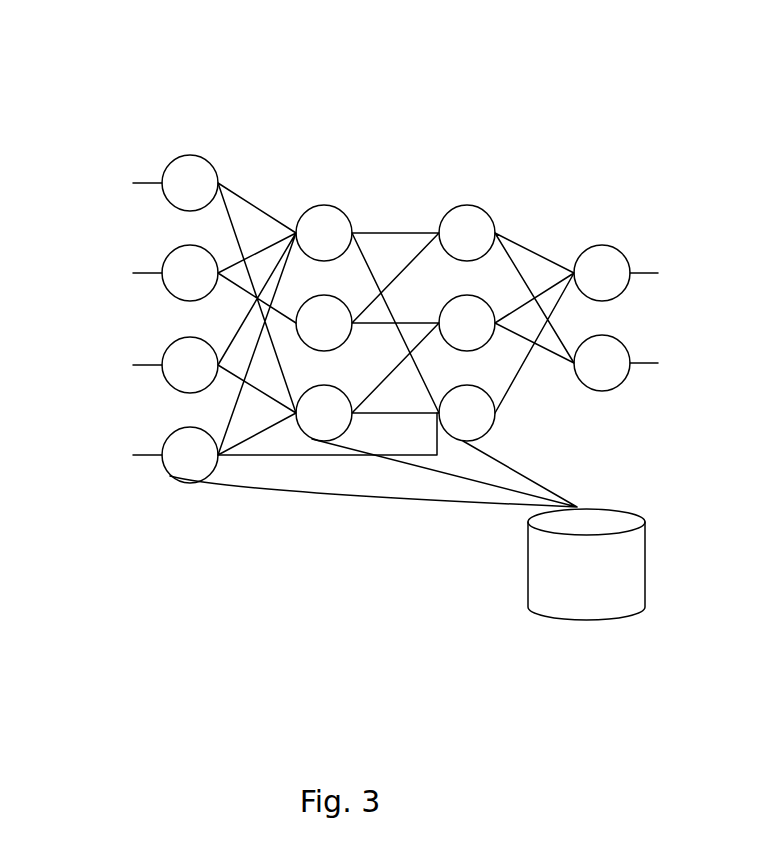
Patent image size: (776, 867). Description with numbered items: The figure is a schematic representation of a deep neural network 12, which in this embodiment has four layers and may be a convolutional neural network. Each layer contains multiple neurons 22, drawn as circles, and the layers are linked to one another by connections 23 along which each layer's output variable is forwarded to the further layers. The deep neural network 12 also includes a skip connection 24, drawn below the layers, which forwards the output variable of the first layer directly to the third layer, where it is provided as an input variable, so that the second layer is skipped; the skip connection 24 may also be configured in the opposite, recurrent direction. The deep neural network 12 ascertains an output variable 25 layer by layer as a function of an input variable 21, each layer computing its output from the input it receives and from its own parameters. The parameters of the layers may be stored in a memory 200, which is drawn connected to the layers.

The deep neural network 12 is at (365, 122).
The input variable 21 is at (141, 182).
The neuron 22 is at (205, 158).
The connection 23 is at (378, 232).
The skip connection 24 is at (315, 460).
The output variable 25 is at (642, 274).
The memory 200 is at (646, 567).